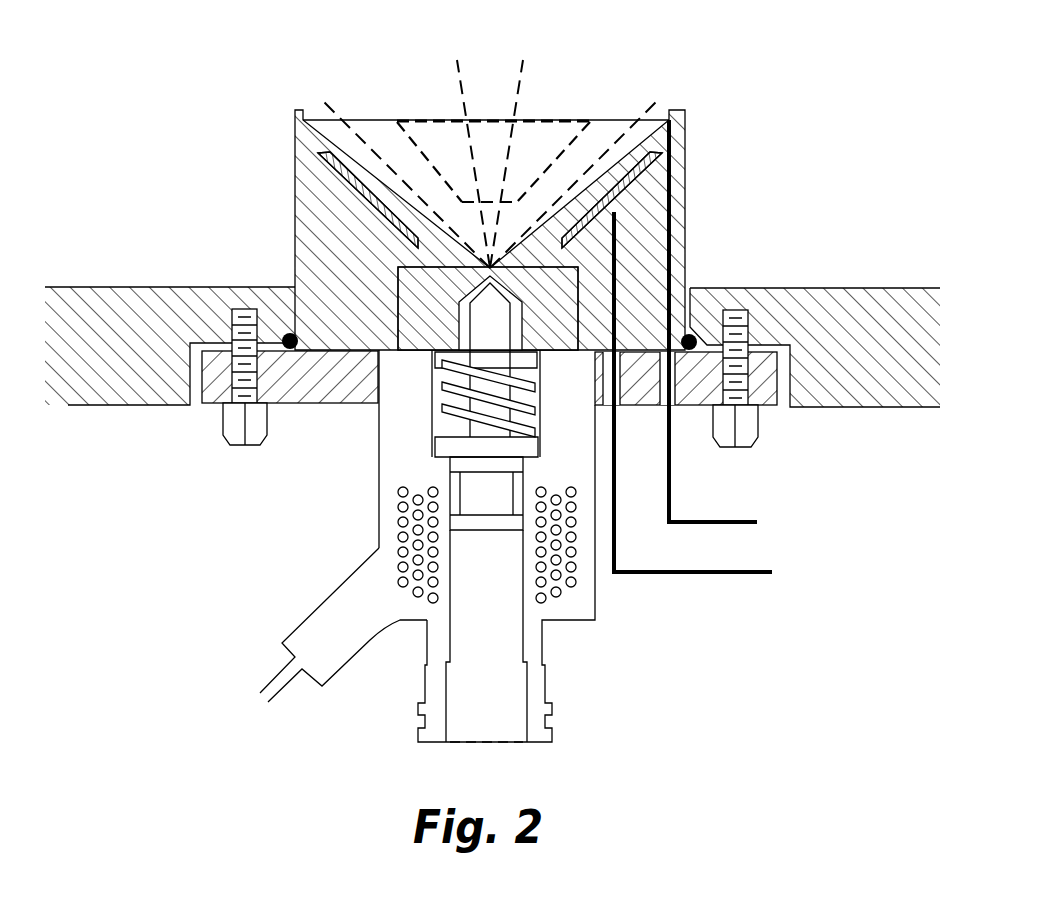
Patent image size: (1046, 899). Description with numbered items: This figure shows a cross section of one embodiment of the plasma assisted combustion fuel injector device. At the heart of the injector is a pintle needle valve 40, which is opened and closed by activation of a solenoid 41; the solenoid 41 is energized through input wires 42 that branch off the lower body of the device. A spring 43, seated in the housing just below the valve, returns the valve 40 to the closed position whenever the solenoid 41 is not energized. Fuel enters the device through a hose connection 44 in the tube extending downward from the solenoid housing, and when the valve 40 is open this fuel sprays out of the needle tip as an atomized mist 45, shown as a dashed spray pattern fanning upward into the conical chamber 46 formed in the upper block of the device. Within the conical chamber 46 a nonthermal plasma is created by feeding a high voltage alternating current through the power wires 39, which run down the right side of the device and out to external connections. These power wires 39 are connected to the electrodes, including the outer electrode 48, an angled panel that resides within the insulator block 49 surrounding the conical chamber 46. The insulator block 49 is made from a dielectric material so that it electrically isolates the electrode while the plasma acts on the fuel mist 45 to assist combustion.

The power wires 39 is at (762, 526).
The pintle needle valve 40 is at (457, 318).
The solenoid 41 is at (507, 506).
The input wires 42 is at (326, 638).
The spring 43 is at (447, 413).
The hose connection 44 is at (508, 656).
The atomized mist 45 is at (657, 90).
The conical chamber 46 is at (592, 194).
The outer electrode 48 is at (362, 205).
The insulator block 49 is at (365, 283).